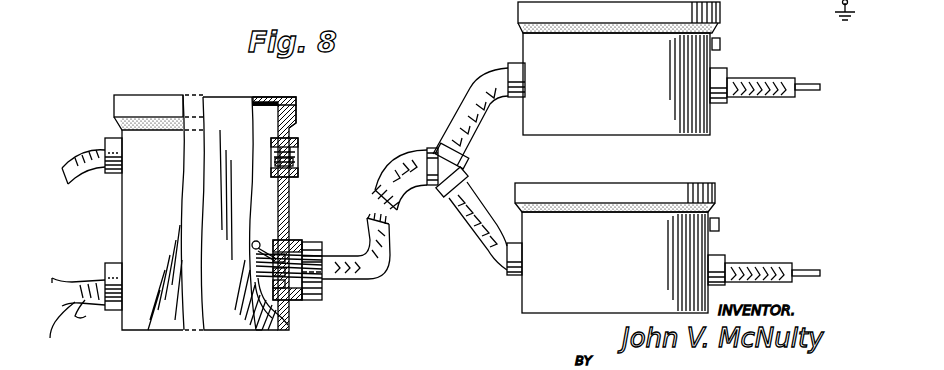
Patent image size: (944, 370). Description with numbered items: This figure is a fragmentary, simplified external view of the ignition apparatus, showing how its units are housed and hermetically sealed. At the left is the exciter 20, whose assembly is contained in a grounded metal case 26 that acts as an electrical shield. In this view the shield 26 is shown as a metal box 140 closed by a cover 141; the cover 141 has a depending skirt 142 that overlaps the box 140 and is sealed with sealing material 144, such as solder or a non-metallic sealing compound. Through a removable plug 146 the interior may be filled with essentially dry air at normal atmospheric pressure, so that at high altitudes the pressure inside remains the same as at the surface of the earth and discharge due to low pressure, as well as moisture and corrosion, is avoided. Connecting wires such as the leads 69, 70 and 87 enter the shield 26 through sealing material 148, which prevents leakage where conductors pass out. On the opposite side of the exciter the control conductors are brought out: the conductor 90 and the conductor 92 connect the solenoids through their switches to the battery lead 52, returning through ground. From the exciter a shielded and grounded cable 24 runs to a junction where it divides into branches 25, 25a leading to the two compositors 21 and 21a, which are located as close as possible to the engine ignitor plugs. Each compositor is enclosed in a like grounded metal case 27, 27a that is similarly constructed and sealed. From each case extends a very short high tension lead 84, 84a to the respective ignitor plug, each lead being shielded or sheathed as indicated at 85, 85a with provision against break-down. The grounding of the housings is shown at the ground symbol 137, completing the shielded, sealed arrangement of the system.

The exciter unit 20 is at (122, 218).
The sealing material 144 is at (120, 122).
The conductor 90 is at (58, 170).
The conductor 52 is at (70, 284).
The conductor 92 is at (89, 314).
The cover 141 is at (266, 97).
The depending skirt 142 is at (298, 104).
The removable plug 146 is at (298, 148).
The metal box 140 is at (290, 183).
The lead 87 is at (252, 245).
The conductor 69 is at (254, 262).
The lead 70 is at (256, 282).
The metal case 26 is at (250, 332).
The sealing material 148 is at (292, 300).
The shielded cable 24 is at (340, 280).
The cable branch 25 is at (470, 112).
The cable branch 25a is at (472, 225).
The compositor unit 21 is at (523, 43).
The compositor unit 21a is at (615, 248).
The metal case 27 is at (716, 36).
The metal case 27a is at (714, 214).
The shield 85 is at (786, 70).
The shield 85a is at (748, 265).
The high tension conductor 84 is at (803, 91).
The high tension conductor 84a is at (812, 266).
The ground connection 137 is at (820, 10).